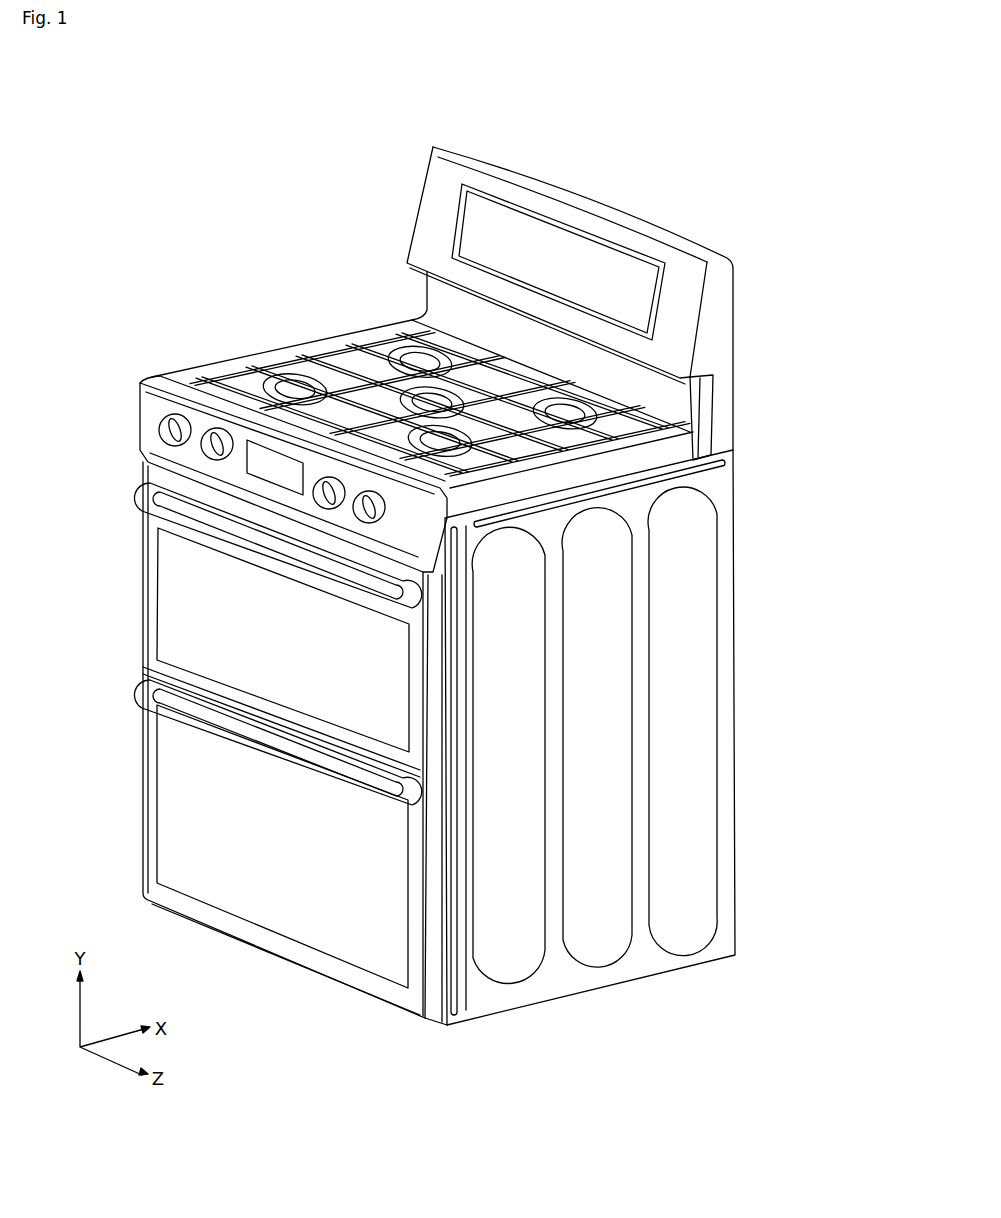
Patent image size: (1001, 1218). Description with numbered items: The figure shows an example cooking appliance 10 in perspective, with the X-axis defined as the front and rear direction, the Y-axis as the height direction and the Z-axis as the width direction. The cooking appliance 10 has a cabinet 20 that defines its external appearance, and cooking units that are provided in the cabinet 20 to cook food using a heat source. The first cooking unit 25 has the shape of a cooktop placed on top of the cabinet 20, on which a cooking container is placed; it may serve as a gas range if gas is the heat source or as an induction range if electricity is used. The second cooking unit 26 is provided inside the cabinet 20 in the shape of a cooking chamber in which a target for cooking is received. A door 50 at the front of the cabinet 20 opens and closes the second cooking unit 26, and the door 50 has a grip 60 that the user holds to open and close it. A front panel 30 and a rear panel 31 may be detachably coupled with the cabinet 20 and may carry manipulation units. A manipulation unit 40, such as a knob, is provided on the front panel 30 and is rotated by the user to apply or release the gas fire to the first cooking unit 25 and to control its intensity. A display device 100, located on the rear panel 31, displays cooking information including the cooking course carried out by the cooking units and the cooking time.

The cooking appliance 10 is at (417, 102).
The cabinet 20 is at (690, 630).
The first cooking unit 25 is at (265, 342).
The second cooking unit 26 is at (610, 860).
The front panel 30 is at (155, 433).
The rear panel 31 is at (723, 291).
The manipulation unit 40 is at (160, 421).
The door 50 is at (172, 605).
The grip 60 is at (140, 687).
The display device 100 is at (546, 234).